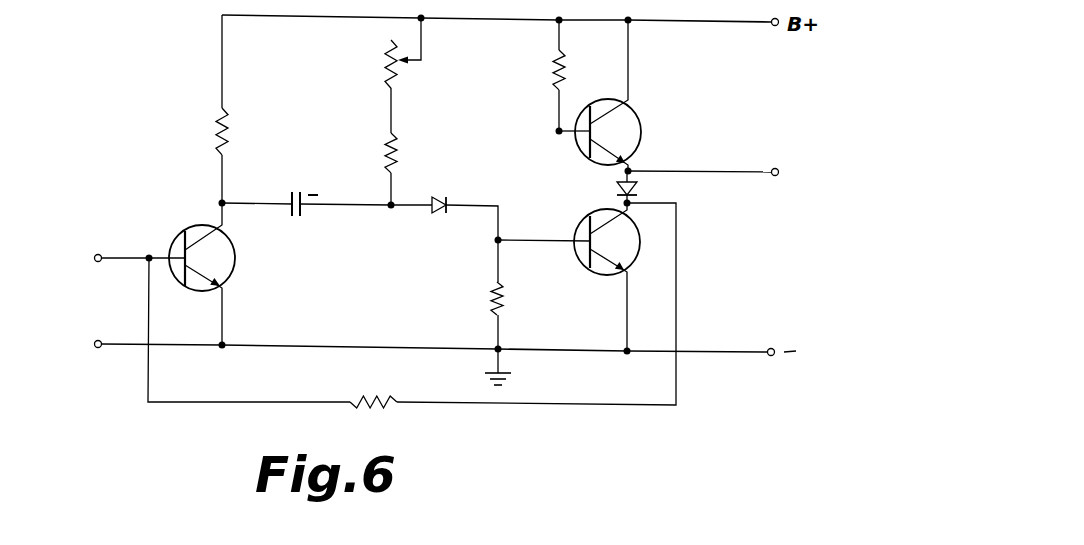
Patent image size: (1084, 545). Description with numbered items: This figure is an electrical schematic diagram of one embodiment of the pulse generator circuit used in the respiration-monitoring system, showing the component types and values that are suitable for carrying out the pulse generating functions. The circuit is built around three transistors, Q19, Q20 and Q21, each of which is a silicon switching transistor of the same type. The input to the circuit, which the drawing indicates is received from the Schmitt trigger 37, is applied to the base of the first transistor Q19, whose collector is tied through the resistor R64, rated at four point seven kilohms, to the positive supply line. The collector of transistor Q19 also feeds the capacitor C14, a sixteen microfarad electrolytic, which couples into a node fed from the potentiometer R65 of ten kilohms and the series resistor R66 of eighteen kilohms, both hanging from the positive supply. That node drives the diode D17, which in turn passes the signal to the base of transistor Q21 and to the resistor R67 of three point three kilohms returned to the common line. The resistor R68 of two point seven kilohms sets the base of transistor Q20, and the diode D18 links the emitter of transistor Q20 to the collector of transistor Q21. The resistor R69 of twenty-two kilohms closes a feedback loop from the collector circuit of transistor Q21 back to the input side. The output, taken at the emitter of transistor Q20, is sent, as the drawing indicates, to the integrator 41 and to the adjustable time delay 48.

The resistor R64 is at (232, 121).
The potentiometer R65 is at (388, 78).
The resistor R66 is at (386, 164).
The resistor R67 is at (504, 294).
The resistor R68 is at (553, 70).
The resistor R69 is at (374, 397).
The capacitor C14 is at (302, 214).
The diode D17 is at (438, 215).
The diode D18 is at (640, 186).
The transistor Q19 is at (190, 290).
The transistor Q20 is at (634, 108).
The transistor Q21 is at (592, 272).
The Schmitt trigger (input) 37 is at (97, 298).
The integrator (output) 41 is at (770, 188).
The adjustable time delay (output) 48 is at (845, 193).